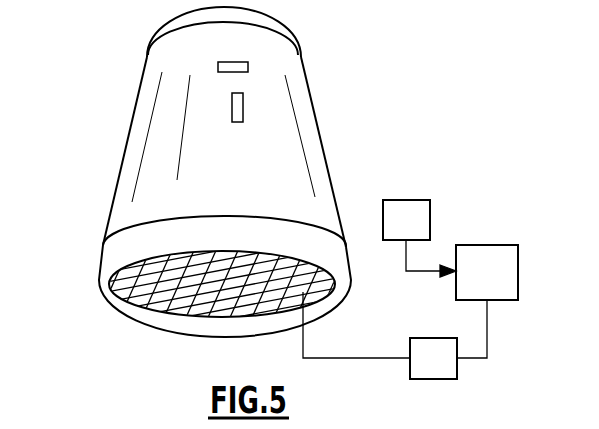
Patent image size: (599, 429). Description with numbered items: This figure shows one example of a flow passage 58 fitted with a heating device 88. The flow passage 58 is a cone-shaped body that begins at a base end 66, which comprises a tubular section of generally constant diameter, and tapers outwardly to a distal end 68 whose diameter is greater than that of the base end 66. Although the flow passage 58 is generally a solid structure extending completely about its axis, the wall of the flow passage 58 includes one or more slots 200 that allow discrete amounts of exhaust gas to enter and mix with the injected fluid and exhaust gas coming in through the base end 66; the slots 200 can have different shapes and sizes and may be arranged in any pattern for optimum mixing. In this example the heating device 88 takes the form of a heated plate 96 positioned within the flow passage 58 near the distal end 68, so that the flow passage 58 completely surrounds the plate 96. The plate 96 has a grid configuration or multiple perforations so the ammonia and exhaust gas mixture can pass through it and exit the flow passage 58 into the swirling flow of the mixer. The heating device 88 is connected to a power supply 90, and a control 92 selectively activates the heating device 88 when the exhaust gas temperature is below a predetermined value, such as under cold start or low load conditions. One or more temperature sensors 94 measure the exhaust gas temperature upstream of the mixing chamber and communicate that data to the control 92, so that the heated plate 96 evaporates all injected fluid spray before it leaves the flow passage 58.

The flow passage 58 is at (322, 148).
The base end 66 is at (152, 35).
The slots 200 is at (243, 107).
The distal end 68 is at (102, 295).
The heating device 88 is at (140, 283).
The heated plate 96 is at (188, 293).
The power supply 90 is at (380, 335).
The control 92 is at (487, 301).
The temperature sensors 94 is at (419, 238).